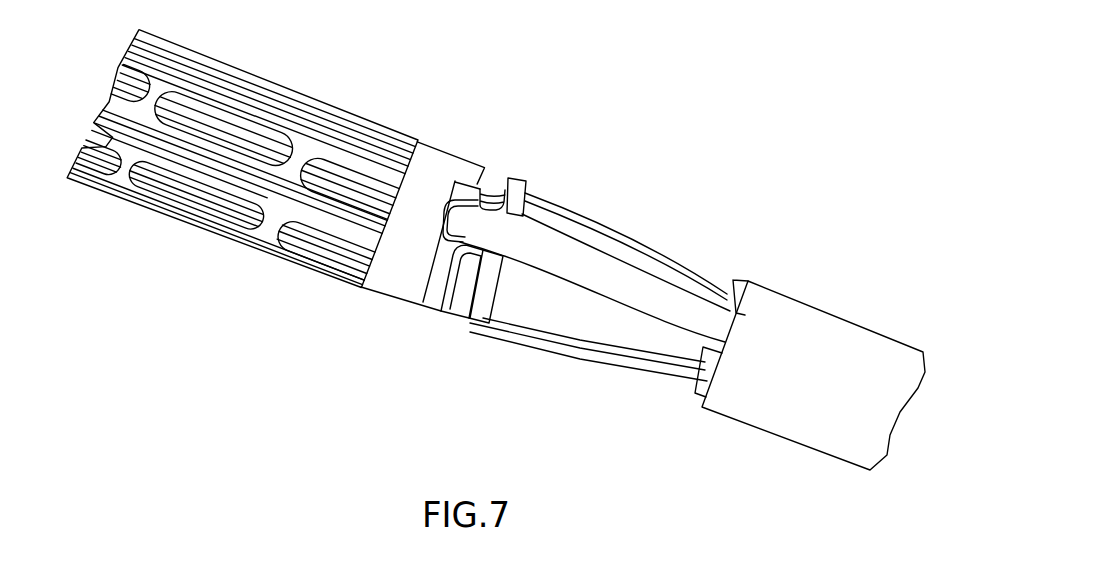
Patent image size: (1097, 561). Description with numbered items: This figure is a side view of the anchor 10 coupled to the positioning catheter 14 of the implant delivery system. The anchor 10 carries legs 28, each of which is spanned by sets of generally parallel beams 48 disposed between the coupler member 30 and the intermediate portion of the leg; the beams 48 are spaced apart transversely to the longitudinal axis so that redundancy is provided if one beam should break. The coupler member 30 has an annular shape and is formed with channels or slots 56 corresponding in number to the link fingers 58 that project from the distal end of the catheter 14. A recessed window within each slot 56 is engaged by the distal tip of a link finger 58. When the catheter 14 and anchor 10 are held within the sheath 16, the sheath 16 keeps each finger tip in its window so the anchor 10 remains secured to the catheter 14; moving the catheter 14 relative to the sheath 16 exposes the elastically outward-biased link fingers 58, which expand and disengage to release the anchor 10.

The anchor 10 is at (496, 238).
The positioning catheter 14 is at (736, 282).
The sheath 16 is at (800, 308).
The legs 28 is at (250, 67).
The coupler member 30 is at (452, 163).
The beams 48 is at (318, 223).
The slots 56 is at (499, 262).
The link fingers 58 is at (588, 252).